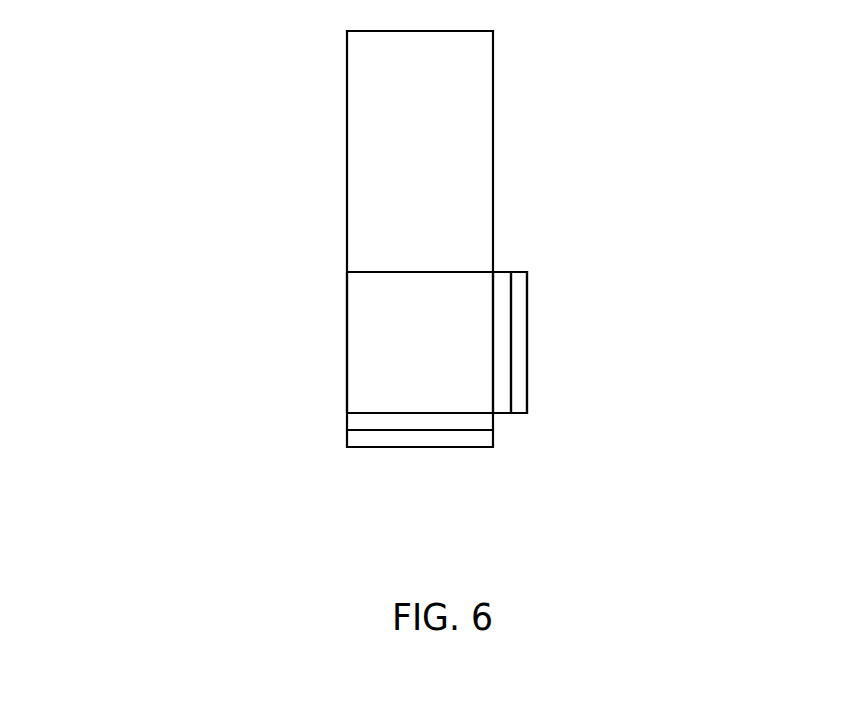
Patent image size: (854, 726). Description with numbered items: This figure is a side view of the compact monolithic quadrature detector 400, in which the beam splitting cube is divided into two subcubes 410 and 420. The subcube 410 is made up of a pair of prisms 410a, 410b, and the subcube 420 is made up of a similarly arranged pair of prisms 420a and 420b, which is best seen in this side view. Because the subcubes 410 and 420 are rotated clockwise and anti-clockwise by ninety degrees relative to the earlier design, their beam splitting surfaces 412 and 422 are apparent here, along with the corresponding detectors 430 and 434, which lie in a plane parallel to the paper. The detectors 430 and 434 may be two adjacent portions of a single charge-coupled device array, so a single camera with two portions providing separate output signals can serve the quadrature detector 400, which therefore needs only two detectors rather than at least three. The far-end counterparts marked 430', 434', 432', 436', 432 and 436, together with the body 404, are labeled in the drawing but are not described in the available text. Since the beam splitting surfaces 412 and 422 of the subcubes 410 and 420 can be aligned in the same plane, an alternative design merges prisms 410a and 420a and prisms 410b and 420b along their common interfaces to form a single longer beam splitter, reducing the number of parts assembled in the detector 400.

The monolithic quadrature detector 400 is at (622, 127).
The housing 404 is at (387, 131).
The subcube 420 is at (235, 292).
The prism 420a is at (447, 293).
The prism 420b is at (379, 321).
The beam splitting surface 412 is at (412, 334).
The beam splitting surface 422 is at (320, 342).
The subcube 410 is at (218, 402).
The prism 410a is at (438, 337).
The prism 410b is at (398, 397).
The inner side wall 430' is at (568, 334).
The inner side wall (far end) 434' is at (625, 342).
The detector 430 is at (583, 342).
The detector 434 is at (636, 342).
The upper bottom wall 432' is at (486, 415).
The upper bottom wall (far end) 436' is at (540, 438).
The lower bottom wall 432 is at (462, 470).
The lower bottom wall (far end) 436 is at (517, 484).